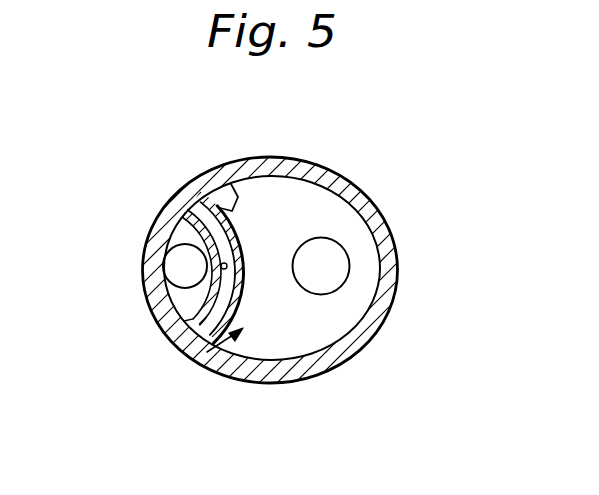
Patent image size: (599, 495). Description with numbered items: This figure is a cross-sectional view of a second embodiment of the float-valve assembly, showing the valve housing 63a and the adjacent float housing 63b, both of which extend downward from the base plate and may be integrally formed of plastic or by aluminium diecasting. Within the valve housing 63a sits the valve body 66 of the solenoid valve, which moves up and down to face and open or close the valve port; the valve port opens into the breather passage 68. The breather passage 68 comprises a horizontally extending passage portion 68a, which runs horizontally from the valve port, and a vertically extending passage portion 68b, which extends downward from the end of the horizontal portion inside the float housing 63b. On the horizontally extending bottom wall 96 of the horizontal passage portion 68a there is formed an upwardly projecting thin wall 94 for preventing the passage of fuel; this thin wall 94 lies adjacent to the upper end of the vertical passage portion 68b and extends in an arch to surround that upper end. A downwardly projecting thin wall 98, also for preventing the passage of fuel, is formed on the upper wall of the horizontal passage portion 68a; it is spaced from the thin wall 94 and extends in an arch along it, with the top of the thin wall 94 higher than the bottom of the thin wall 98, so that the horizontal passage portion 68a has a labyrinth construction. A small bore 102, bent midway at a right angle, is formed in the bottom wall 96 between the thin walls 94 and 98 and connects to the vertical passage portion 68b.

The valve housing 63a is at (299, 247).
The float housing 63b is at (122, 332).
The valve body 66 is at (343, 263).
The breather passage 68 is at (207, 376).
The horizontally extending passage portion 68a is at (313, 213).
The vertically extending passage portion 68b is at (183, 266).
The upwardly projecting thin wall 94 is at (171, 236).
The horizontally extending bottom wall 96 is at (287, 210).
The downwardly projecting thin wall 98 is at (233, 186).
The small bore 102 is at (200, 325).